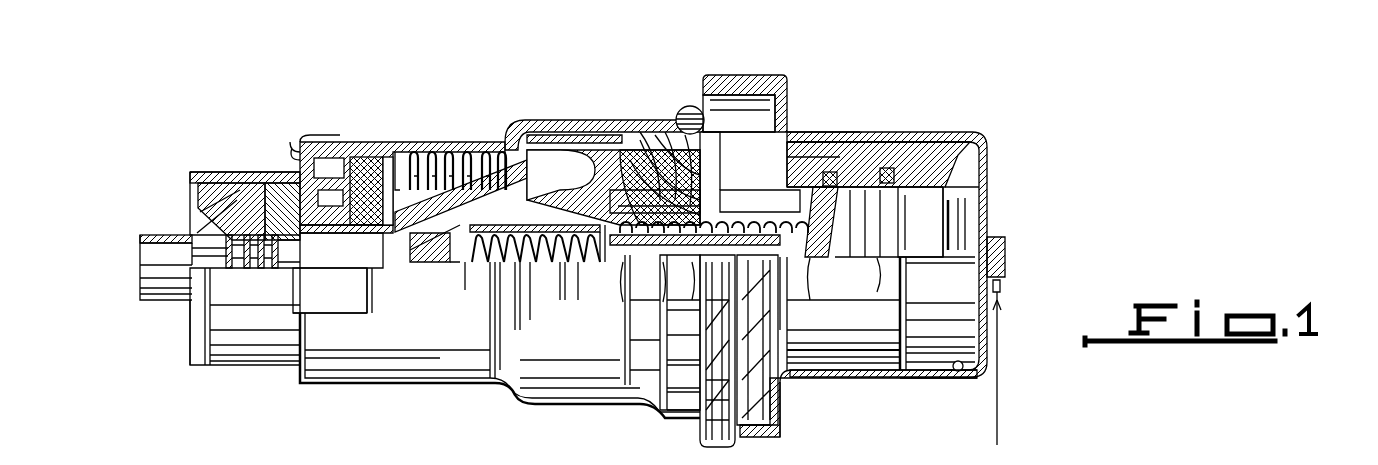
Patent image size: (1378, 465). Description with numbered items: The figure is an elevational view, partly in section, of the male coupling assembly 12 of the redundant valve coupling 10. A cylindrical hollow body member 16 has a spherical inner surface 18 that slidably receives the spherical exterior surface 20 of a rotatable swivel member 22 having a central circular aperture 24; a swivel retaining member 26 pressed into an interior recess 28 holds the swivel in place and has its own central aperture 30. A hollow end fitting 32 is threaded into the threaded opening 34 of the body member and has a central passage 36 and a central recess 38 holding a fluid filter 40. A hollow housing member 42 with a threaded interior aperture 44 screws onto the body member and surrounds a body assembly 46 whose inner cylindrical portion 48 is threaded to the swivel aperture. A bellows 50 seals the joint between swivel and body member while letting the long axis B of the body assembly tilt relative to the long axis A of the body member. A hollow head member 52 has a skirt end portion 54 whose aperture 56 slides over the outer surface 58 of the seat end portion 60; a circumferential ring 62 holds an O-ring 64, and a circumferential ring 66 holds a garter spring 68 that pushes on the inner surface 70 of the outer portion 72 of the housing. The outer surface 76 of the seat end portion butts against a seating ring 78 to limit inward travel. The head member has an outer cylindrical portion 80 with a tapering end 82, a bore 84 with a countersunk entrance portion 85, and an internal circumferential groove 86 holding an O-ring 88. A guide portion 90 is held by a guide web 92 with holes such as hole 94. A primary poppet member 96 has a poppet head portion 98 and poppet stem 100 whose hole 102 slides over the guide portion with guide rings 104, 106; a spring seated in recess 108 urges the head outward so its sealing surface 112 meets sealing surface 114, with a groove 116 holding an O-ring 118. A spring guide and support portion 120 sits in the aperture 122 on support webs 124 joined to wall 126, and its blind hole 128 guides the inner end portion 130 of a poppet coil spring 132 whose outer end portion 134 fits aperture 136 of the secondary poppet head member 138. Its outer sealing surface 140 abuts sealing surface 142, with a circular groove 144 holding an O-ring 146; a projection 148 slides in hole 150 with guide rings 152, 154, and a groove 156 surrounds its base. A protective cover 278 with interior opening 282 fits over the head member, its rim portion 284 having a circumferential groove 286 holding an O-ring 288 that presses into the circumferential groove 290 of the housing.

The redundant valve coupling 10 is at (876, 74).
The male coupling assembly 12 is at (507, 94).
The body member 16 is at (222, 175).
The inner surface 18 is at (378, 160).
The exterior surface 20 is at (386, 190).
The swivel member 22 is at (341, 160).
The central circular aperture 24 is at (297, 262).
The swivel retaining member 26 is at (250, 172).
The interior recess 28 is at (280, 175).
The central aperture 30 is at (266, 278).
The end fitting 32 is at (162, 233).
The threaded opening 34 is at (190, 178).
The central passage 36 is at (145, 244).
The central recess 38 is at (235, 215).
The fluid filter 40 is at (243, 206).
The housing member 42 is at (297, 150).
The threaded interior aperture 44 is at (312, 145).
The body assembly 46 is at (478, 172).
The inner cylindrical portion 48 is at (337, 235).
The bellows 50 is at (434, 170).
The head member 52 is at (795, 158).
The skirt end portion 54 is at (648, 155).
The aperture 56 is at (672, 140).
The outer surface 58 is at (655, 140).
The seat end portion 60 is at (693, 262).
The circumferential ring 62 is at (686, 140).
The O-ring 64 is at (700, 140).
The circumferential ring 66 is at (740, 135).
The garter spring 68 is at (718, 140).
The inner surface 70 is at (735, 120).
The outer portion 72 is at (745, 90).
The outer surface 76 is at (790, 150).
The seating ring 78 is at (715, 185).
The outer cylindrical portion 80 is at (903, 136).
The tapering end 82 is at (950, 155).
The bore 84 is at (950, 196).
The countersunk entrance portion 85 is at (948, 182).
The internal circumferential groove 86 is at (897, 202).
The O-ring 88 is at (895, 222).
The guide portion 90 is at (652, 262).
The guide web 92 is at (735, 276).
The hole 94 is at (722, 201).
The primary poppet member 96 is at (815, 257).
The poppet head portion 98 is at (880, 305).
The poppet stem 100 is at (780, 307).
The hole 102 is at (708, 375).
The guide ring 104 is at (706, 310).
The guide ring 106 is at (822, 248).
The recess 108 is at (605, 268).
The sealing surface 112 is at (857, 138).
The sealing surface 114 is at (848, 135).
The groove 116 is at (878, 257).
The O-ring 118 is at (966, 277).
The spring guide and support portion 120 is at (405, 295).
The aperture 122 is at (372, 268).
The support web 124 is at (445, 262).
The wall 126 is at (490, 262).
The blind hole 128 is at (491, 270).
The inner end portion 130 is at (475, 320).
The poppet coil spring 132 is at (521, 332).
The outer end portion 134 is at (596, 262).
The aperture 136 is at (577, 262).
The secondary poppet head member 138 is at (600, 150).
The outer sealing surface 140 is at (617, 140).
The sealing surface 142 is at (620, 206).
The circular groove 144 is at (755, 135).
The O-ring 146 is at (618, 198).
The projection 148 is at (708, 402).
The hole 150 is at (708, 348).
The guide ring 152 is at (647, 292).
The guide ring 154 is at (607, 360).
The groove 156 is at (542, 258).
The protective cover 278 is at (918, 380).
The interior opening 282 is at (957, 380).
The rim portion 284 is at (788, 425).
The circumferential groove 286 is at (792, 420).
The O-ring 288 is at (795, 383).
The circumferential groove 290 is at (765, 125).
The long axis A is at (187, 313).
The long axis B is at (506, 316).